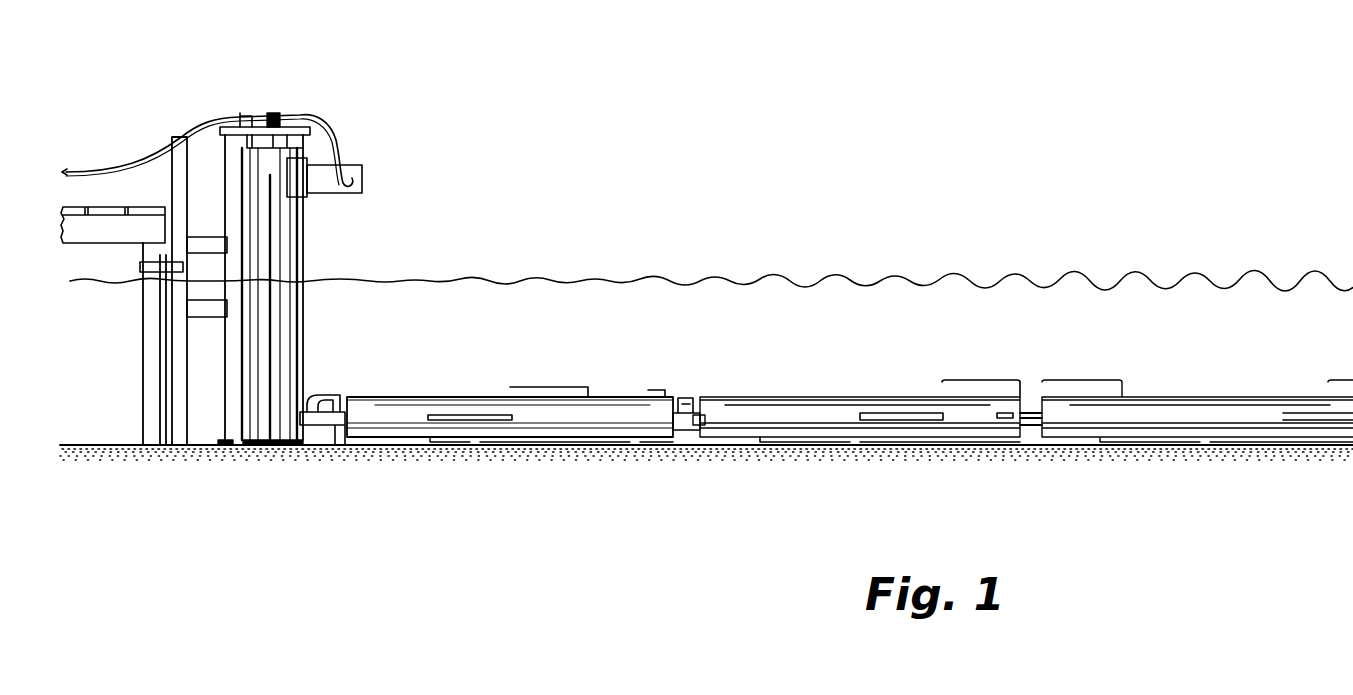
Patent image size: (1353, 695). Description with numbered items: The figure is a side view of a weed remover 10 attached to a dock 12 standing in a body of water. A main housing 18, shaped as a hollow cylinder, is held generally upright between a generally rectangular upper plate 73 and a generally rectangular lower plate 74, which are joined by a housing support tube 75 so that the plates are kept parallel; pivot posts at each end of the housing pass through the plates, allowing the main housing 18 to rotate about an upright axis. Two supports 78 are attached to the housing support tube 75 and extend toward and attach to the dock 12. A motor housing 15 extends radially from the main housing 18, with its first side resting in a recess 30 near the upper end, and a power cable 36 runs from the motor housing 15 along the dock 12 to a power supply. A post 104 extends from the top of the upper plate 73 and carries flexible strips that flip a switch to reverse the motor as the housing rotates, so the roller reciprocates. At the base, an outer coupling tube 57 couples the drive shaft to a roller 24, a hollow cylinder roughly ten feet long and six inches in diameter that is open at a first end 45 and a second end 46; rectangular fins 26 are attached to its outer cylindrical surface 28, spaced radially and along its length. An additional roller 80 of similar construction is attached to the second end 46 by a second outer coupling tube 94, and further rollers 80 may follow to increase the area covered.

The weed remover 10 is at (388, 83).
The dock 12 is at (114, 202).
The motor housing 15 is at (351, 182).
The main housing 18 is at (303, 238).
The roller 24 is at (850, 417).
The rectangular fins 26 is at (575, 390).
The outer cylindrical surface 28 is at (465, 393).
The recess 30 is at (305, 160).
The power cable 36 is at (197, 118).
The first end 45 is at (343, 431).
The second end 46 is at (682, 397).
The outer coupling tube 57 is at (311, 418).
The upper plate 73 is at (288, 115).
The lower plate 74 is at (232, 447).
The housing support tube 75 is at (235, 368).
The supports 78 is at (213, 304).
The additional roller 80 is at (848, 395).
The second outer coupling tube 94 is at (702, 410).
The post 104 is at (270, 115).